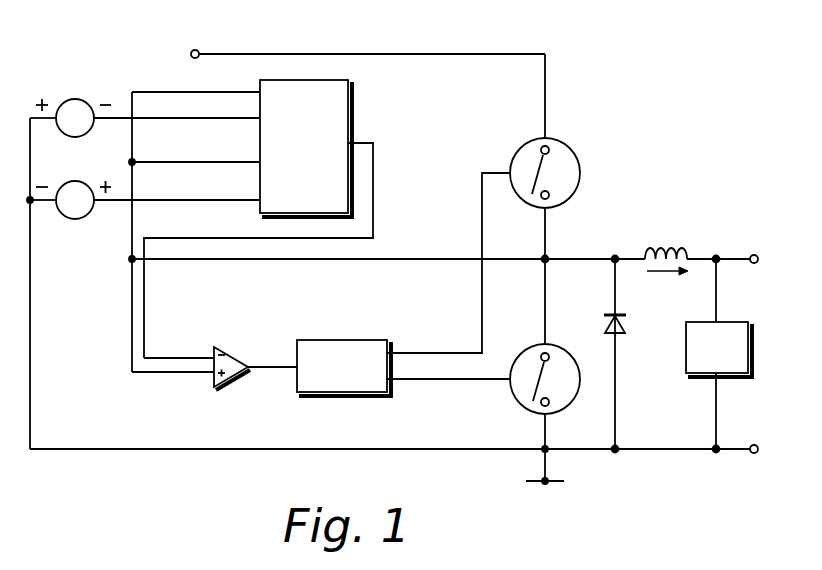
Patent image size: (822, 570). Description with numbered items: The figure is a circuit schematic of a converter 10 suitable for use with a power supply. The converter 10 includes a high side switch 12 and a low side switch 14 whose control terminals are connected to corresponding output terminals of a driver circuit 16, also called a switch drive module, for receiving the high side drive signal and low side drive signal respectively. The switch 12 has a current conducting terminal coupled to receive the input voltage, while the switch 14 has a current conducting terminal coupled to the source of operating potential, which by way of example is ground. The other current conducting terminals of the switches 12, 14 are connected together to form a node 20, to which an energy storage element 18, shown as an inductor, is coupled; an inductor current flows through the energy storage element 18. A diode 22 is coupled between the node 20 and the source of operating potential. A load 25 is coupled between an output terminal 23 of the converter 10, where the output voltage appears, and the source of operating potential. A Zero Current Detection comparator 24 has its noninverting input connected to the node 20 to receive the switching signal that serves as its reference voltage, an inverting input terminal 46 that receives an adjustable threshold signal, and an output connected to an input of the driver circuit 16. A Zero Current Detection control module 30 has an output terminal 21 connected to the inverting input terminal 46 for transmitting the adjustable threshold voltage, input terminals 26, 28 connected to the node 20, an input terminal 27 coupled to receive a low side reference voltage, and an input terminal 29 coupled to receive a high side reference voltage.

The converter 10 is at (698, 171).
The switch 12 is at (578, 153).
The switch 14 is at (520, 352).
The driver circuit 16 is at (325, 338).
The energy storage element 18 is at (677, 243).
The node 20 is at (542, 257).
The output terminal 21 is at (363, 142).
The diode 22 is at (626, 317).
The output terminal 23 is at (754, 267).
The Zero Current Detection comparator 24 is at (237, 380).
The load 25 is at (753, 338).
The input terminal 26 is at (247, 91).
The input terminal 27 is at (248, 119).
The input terminal 28 is at (248, 163).
The input terminal 29 is at (245, 203).
The Zero Current Detection control module 30 is at (354, 93).
The inverting input terminal 46 is at (200, 357).